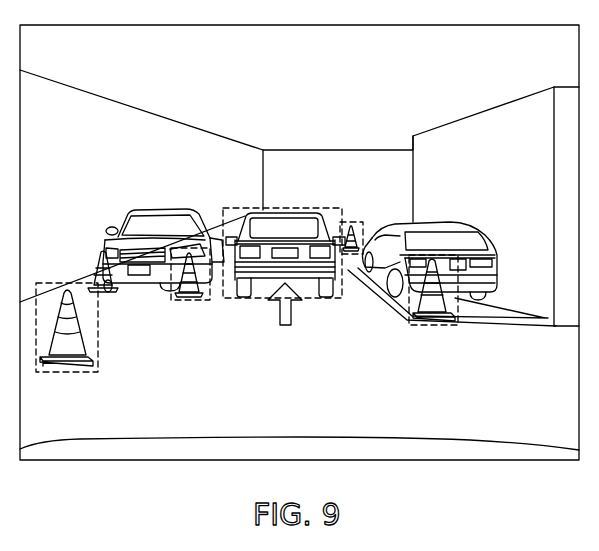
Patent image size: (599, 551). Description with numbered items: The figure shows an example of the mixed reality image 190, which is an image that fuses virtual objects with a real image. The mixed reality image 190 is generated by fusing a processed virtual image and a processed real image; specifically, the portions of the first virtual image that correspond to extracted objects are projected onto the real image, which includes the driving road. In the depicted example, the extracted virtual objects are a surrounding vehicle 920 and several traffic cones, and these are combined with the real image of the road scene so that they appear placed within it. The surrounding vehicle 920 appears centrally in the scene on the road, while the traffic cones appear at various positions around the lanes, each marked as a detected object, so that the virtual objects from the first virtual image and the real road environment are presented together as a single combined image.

The mixed reality image 190 is at (71, 58).
The surrounding vehicle 920 is at (310, 300).